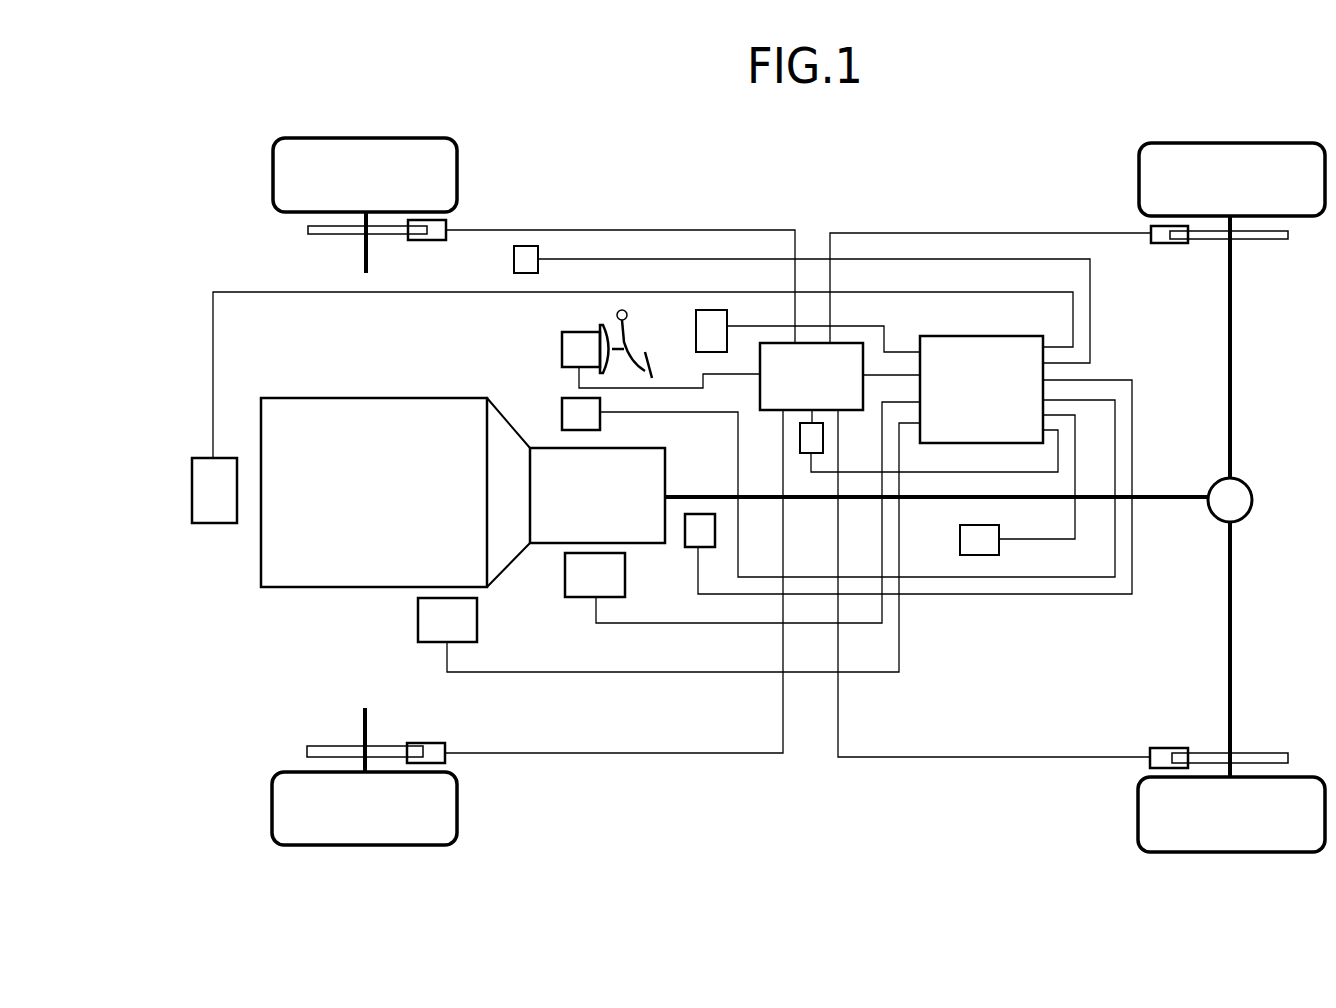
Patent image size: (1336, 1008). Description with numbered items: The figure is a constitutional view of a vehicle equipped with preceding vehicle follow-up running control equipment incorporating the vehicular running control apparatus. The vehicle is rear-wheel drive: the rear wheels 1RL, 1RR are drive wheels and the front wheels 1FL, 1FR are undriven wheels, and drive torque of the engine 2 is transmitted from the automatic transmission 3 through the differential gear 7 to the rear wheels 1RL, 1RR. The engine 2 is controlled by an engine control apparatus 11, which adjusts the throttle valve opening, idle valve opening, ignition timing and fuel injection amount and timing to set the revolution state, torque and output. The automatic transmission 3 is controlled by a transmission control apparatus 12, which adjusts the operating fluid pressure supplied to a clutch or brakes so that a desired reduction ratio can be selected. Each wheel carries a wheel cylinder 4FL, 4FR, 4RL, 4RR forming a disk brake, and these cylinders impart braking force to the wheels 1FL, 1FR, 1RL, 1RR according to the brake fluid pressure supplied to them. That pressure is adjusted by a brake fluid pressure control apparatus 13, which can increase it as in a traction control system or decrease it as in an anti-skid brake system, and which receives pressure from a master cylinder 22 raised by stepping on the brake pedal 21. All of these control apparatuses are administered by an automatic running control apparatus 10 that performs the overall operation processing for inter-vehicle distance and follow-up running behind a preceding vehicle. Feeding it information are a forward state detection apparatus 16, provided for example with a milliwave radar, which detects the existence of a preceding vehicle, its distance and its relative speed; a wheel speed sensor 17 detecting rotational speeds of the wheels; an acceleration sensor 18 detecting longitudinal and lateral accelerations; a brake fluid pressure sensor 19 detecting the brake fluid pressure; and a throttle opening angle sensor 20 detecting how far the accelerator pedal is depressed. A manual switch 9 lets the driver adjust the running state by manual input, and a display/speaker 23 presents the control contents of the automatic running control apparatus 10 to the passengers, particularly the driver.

The front wheel 1FR is at (357, 138).
The front wheel 1FL is at (362, 845).
The rear wheel 1RR is at (1228, 143).
The rear wheel 1RL is at (1225, 852).
The wheel cylinder 4FR is at (427, 240).
The wheel cylinder 4FL is at (425, 743).
The wheel cylinder 4RR is at (1162, 243).
The wheel cylinder 4RL is at (1160, 748).
The engine 2 is at (384, 507).
The automatic transmission 3 is at (609, 507).
The differential gear 7 is at (1253, 493).
The manual switch 9 is at (562, 410).
The automatic running control apparatus 10 is at (1001, 405).
The engine control apparatus 11 is at (418, 615).
The transmission control apparatus 12 is at (578, 598).
The brake fluid pressure control apparatus 13 is at (832, 391).
The forward state detection apparatus 16 is at (192, 490).
The wheel speed sensor 17 is at (685, 528).
The acceleration sensor 18 is at (983, 555).
The brake fluid pressure sensor 19 is at (800, 455).
The throttle opening angle sensor 20 is at (514, 258).
The brake pedal 21 is at (630, 337).
The master cylinder 22 is at (562, 345).
The display/speaker 23 is at (708, 310).